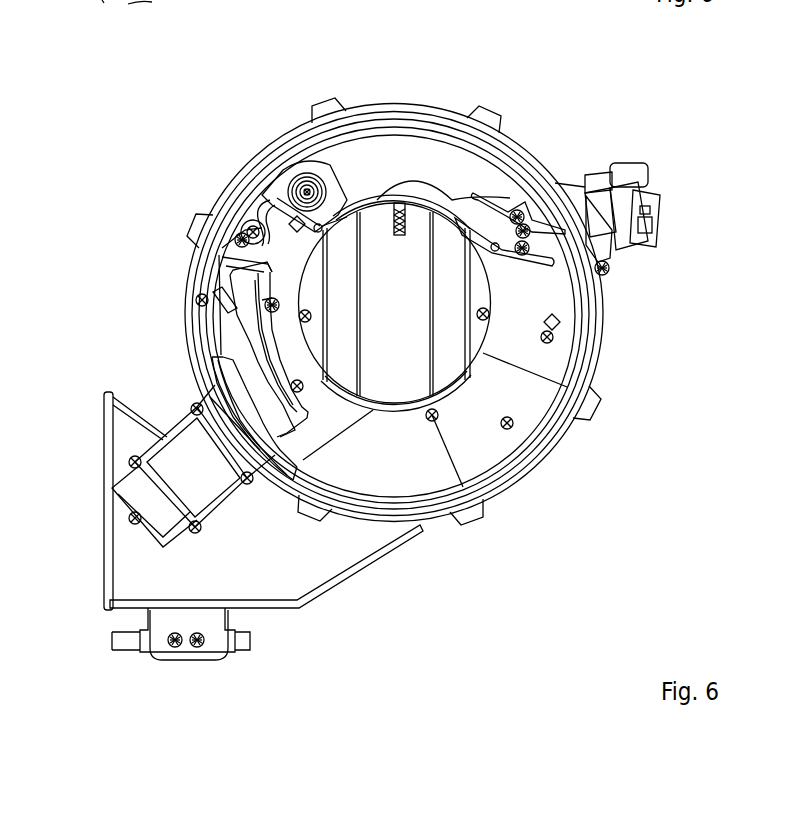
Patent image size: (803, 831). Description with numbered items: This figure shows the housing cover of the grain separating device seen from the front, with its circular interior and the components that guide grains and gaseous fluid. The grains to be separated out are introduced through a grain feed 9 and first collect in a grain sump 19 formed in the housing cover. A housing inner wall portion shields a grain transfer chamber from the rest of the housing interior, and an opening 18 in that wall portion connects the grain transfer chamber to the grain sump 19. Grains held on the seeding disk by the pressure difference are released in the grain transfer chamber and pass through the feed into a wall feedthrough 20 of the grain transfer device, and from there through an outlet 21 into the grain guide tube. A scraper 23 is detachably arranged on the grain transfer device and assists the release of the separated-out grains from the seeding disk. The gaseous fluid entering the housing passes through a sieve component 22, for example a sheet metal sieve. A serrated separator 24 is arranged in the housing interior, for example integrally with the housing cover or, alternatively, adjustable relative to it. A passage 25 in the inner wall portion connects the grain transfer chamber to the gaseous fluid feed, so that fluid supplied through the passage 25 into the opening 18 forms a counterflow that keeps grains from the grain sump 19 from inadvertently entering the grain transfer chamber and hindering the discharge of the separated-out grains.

The grain feed 9 is at (317, 555).
The opening 18 is at (340, 203).
The grain sump 19 is at (560, 353).
The wall feedthrough 20 is at (575, 182).
The outlet 21 is at (660, 212).
The sieve component 22 is at (418, 250).
The scraper 23 is at (487, 198).
The serrated separator 24 is at (205, 378).
The passage 25 is at (405, 202).